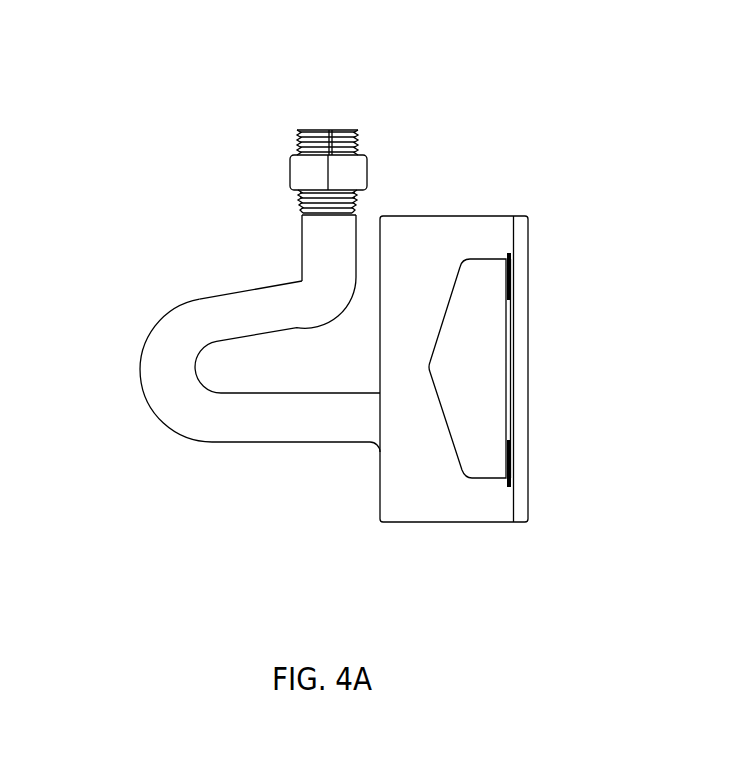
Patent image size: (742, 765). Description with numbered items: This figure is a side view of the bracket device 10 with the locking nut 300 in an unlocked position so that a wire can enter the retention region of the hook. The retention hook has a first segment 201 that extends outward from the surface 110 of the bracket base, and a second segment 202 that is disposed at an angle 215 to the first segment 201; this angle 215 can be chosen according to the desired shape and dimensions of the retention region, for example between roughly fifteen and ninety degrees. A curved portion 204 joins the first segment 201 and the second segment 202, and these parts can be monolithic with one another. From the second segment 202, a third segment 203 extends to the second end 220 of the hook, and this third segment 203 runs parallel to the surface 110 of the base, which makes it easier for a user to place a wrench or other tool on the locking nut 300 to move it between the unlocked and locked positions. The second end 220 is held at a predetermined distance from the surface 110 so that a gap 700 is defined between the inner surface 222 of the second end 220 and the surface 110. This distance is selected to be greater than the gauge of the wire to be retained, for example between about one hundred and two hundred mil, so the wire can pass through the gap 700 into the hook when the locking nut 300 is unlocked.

The bracket device 10 is at (133, 152).
The third segment 203 is at (287, 148).
The second end 220 is at (318, 127).
The locking nut 300 is at (368, 167).
The gap 700 is at (365, 213).
The inner surface 222 is at (353, 225).
The second segment 202 is at (232, 288).
The curved portion 204 is at (143, 398).
The first segment 201 is at (260, 453).
The angle 215 is at (258, 362).
The surface 110 is at (382, 232).